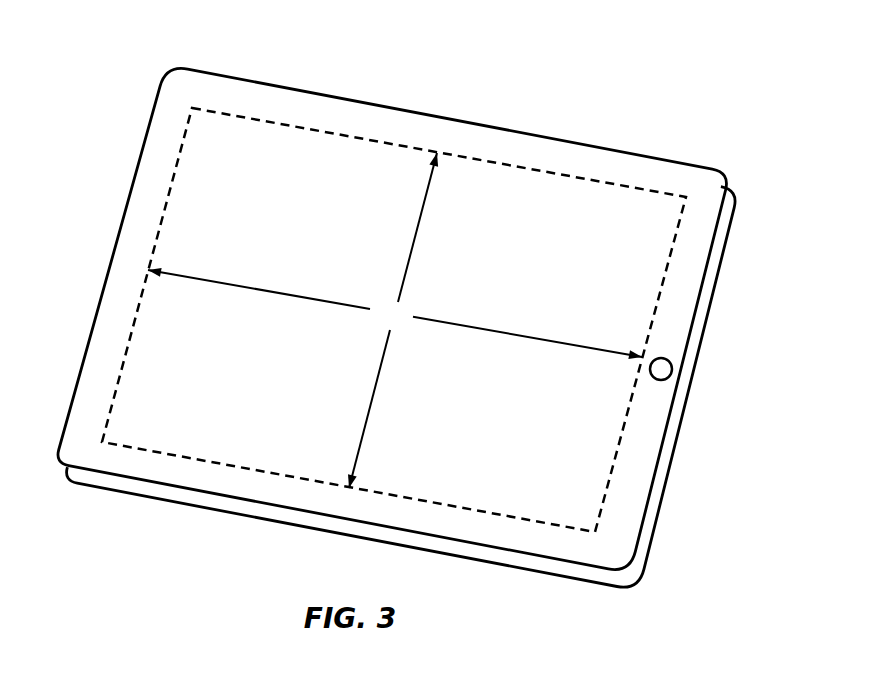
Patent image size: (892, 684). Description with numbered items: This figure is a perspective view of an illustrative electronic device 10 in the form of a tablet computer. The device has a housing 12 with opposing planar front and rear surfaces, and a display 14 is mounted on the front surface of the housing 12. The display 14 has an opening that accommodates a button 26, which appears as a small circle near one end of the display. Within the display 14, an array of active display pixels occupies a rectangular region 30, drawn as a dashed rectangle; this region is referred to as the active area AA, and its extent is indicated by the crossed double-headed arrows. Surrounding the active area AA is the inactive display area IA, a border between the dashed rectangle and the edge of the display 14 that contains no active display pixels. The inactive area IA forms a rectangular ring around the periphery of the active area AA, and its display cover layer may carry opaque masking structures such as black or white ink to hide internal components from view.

The electronic device 10 is at (412, 326).
The housing 12 is at (494, 556).
The display 14 is at (283, 148).
The button 26 is at (672, 369).
The rectangular region 30 is at (207, 463).
The inactive display area IA is at (603, 165).
The active area AA is at (395, 320).